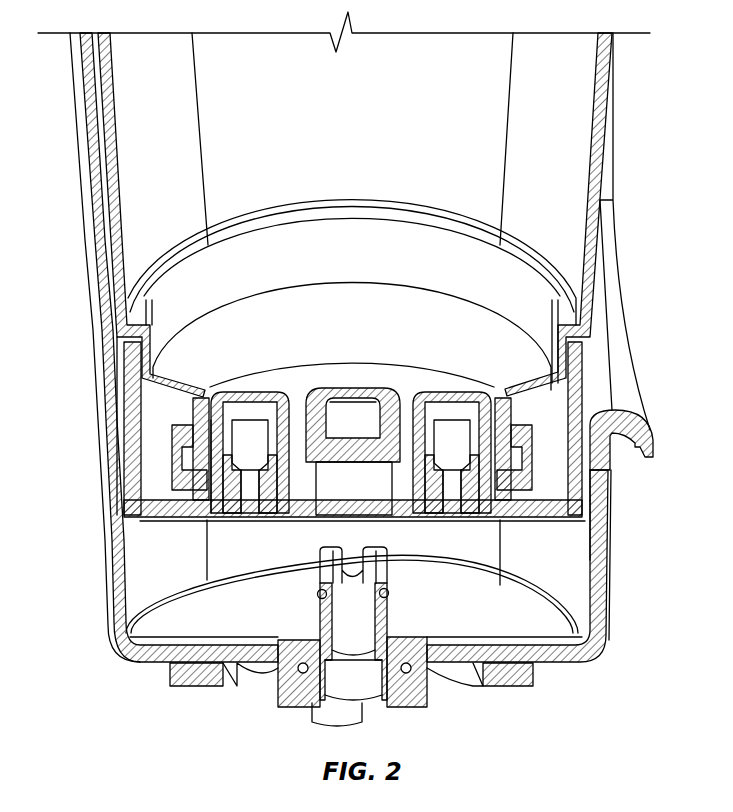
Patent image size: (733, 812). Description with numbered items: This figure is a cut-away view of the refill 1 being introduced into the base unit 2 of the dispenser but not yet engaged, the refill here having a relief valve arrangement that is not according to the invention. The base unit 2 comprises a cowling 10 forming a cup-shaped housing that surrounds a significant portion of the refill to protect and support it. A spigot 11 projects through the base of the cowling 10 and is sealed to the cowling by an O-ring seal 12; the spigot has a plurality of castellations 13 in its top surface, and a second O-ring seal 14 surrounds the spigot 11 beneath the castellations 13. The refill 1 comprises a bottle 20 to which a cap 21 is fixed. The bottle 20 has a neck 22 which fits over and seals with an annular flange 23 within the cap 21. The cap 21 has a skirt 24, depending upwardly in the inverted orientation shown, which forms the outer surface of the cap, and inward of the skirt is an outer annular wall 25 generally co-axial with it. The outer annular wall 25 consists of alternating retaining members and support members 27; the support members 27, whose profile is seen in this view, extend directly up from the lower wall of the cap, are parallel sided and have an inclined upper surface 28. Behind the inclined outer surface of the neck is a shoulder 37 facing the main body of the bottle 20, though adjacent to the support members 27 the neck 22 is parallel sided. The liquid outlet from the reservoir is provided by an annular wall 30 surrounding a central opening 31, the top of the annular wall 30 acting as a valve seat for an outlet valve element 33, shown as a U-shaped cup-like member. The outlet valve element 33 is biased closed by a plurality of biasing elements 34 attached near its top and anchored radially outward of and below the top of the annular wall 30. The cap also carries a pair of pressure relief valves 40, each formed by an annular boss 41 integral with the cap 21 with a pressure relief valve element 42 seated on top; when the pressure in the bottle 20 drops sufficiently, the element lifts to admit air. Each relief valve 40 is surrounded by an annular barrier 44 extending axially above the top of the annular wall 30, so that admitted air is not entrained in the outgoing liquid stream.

The refill 1 is at (344, 50).
The base unit 2 is at (614, 604).
The cowling 10 is at (607, 283).
The spigot 11 is at (380, 622).
The O-ring seal 12 is at (300, 670).
The castellations 13 is at (372, 555).
The second O-ring seal 14 is at (320, 593).
The bottle 20 is at (355, 333).
The cap 21 is at (575, 365).
The neck 22 is at (513, 447).
The annular flange 23 is at (125, 518).
The skirt 24 is at (130, 398).
The outer annular wall 25 is at (148, 430).
The support members 27 is at (165, 472).
The inclined upper surface 28 is at (607, 495).
The annular wall 30 is at (300, 515).
The central opening 31 is at (350, 490).
The outlet valve element 33 is at (360, 400).
The biasing elements 34 is at (340, 408).
The shoulder 37 is at (592, 532).
The pressure relief valves 40 is at (240, 500).
The annular boss 41 is at (262, 500).
The pressure relief valve element 42 is at (214, 392).
The annular barrier 44 is at (250, 392).